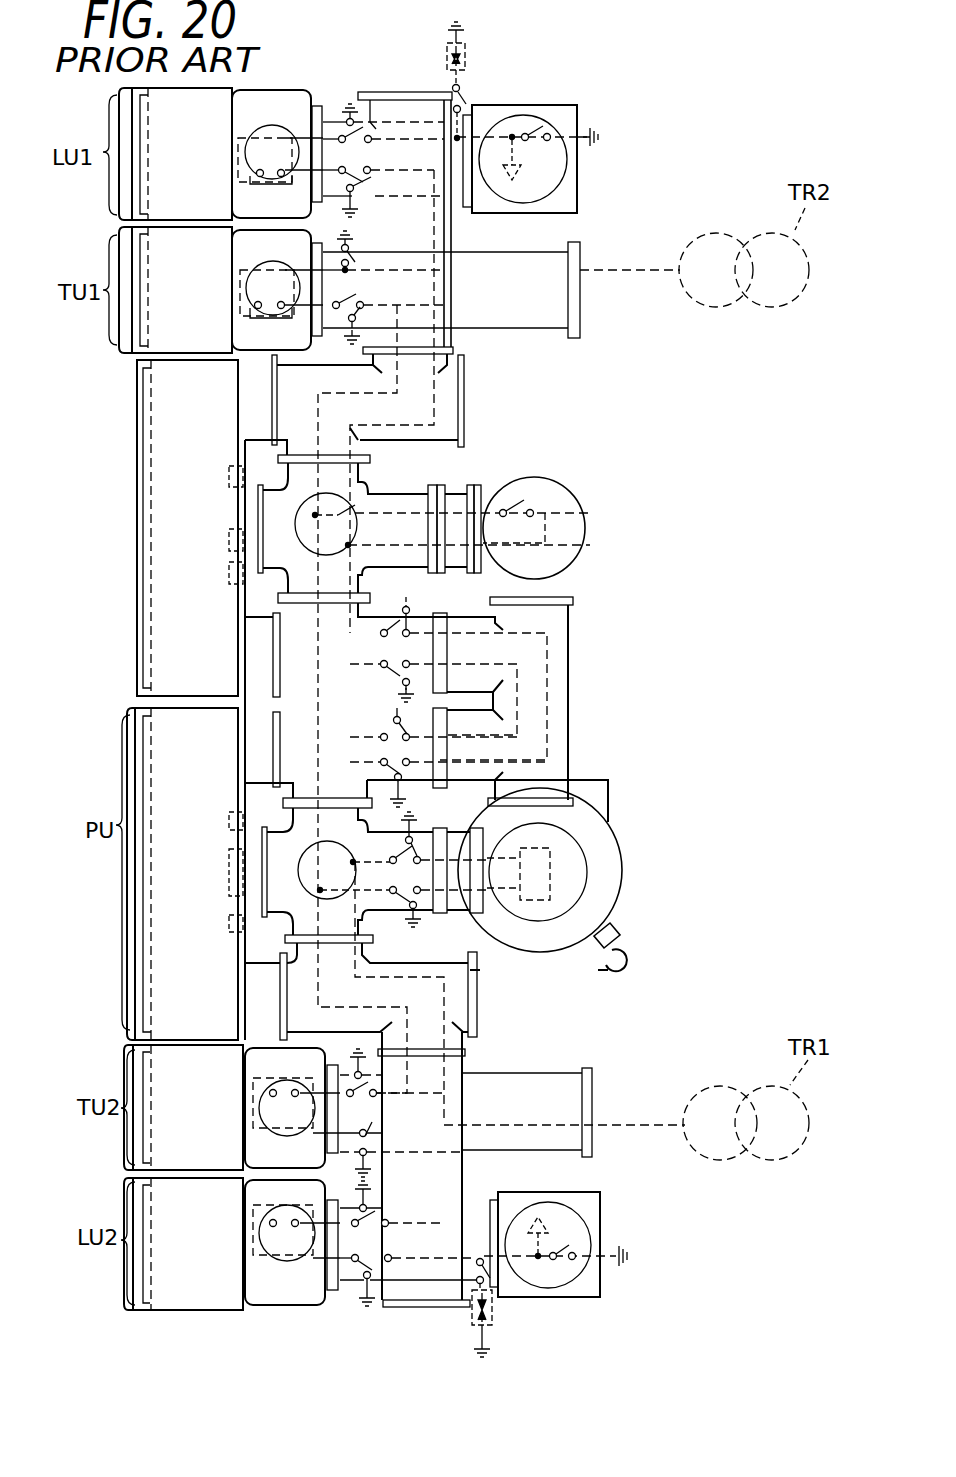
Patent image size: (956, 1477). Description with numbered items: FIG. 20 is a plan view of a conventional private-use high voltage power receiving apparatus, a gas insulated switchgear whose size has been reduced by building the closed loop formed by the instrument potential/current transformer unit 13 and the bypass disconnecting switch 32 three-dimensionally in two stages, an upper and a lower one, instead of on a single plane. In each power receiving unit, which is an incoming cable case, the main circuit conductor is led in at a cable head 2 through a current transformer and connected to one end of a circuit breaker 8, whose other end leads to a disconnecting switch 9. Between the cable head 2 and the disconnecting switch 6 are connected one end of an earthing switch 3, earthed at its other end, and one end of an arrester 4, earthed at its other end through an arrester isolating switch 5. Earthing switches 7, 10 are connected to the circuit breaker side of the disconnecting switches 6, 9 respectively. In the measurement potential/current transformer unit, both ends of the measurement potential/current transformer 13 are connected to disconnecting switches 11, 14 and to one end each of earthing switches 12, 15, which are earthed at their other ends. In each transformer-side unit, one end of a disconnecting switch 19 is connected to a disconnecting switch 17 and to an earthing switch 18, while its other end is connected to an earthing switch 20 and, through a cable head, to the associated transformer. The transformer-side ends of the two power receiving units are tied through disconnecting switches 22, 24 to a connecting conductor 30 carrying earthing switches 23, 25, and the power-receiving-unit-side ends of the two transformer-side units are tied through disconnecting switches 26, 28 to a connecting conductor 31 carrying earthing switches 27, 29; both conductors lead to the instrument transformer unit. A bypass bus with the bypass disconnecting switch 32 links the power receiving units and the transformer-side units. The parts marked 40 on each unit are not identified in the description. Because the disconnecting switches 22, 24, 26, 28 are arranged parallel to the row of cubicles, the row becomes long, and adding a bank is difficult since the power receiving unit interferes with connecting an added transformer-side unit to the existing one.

The cable head 2 is at (522, 187).
The earthing switch 3 is at (540, 127).
The arrester 4 is at (468, 48).
The arrester isolating switch 5 is at (470, 98).
The disconnecting switch 6 is at (378, 95).
The earthing switch 7 is at (338, 103).
The circuit breaker 8 is at (258, 183).
The disconnecting switch 9 is at (360, 163).
The earthing switch 10 is at (373, 205).
The disconnecting switch 11 is at (405, 908).
The earthing switch 12 is at (413, 928).
The instrument potential/current transformer unit 13 is at (550, 870).
The disconnecting switch 14 is at (353, 862).
The earthing switch 15 is at (393, 860).
The disconnecting switch 17 is at (350, 308).
The earthing switch 18 is at (345, 350).
The disconnecting switch 19 is at (243, 323).
The earthing switch 20 is at (370, 197).
The disconnecting switch 22 is at (390, 606).
The earthing switch 23 is at (403, 597).
The disconnecting switch 24 is at (378, 768).
The earthing switch 25 is at (405, 800).
The disconnecting switch 26 is at (387, 663).
The earthing switch 27 is at (410, 682).
The disconnecting switch 28 is at (378, 732).
The earthing switch 29 is at (380, 712).
The connecting conductor 30 is at (548, 652).
The connecting conductor 31 is at (520, 695).
The bypass disconnecting switch 32 is at (513, 500).
The control box 40 is at (133, 116).